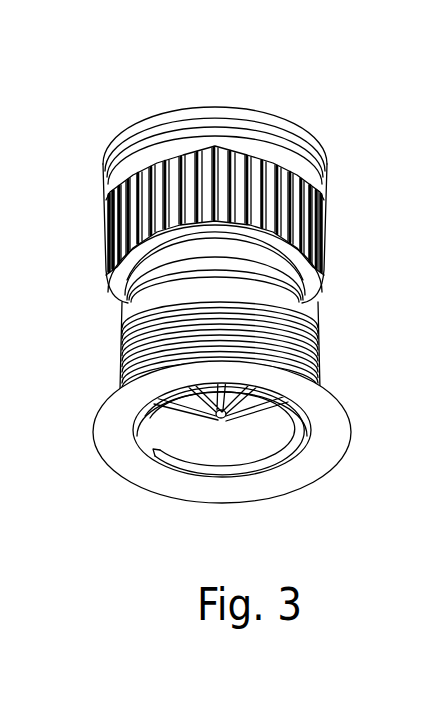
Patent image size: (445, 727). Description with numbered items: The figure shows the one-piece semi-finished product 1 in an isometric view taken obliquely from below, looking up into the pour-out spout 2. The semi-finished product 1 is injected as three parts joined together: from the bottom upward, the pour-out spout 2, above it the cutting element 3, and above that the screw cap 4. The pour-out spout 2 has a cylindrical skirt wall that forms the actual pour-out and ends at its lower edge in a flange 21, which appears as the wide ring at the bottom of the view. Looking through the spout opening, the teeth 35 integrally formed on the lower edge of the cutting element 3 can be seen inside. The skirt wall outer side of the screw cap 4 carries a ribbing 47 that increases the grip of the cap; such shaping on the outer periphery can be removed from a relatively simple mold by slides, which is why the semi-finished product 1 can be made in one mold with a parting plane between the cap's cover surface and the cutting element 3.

The semi-finished product 1 is at (353, 157).
The pour-out spout 2 is at (305, 356).
The cutting element 3 is at (305, 282).
The screw cap 4 is at (300, 235).
The flange 21 is at (165, 485).
The tooth 35 is at (232, 418).
The ribbing 47 is at (122, 217).